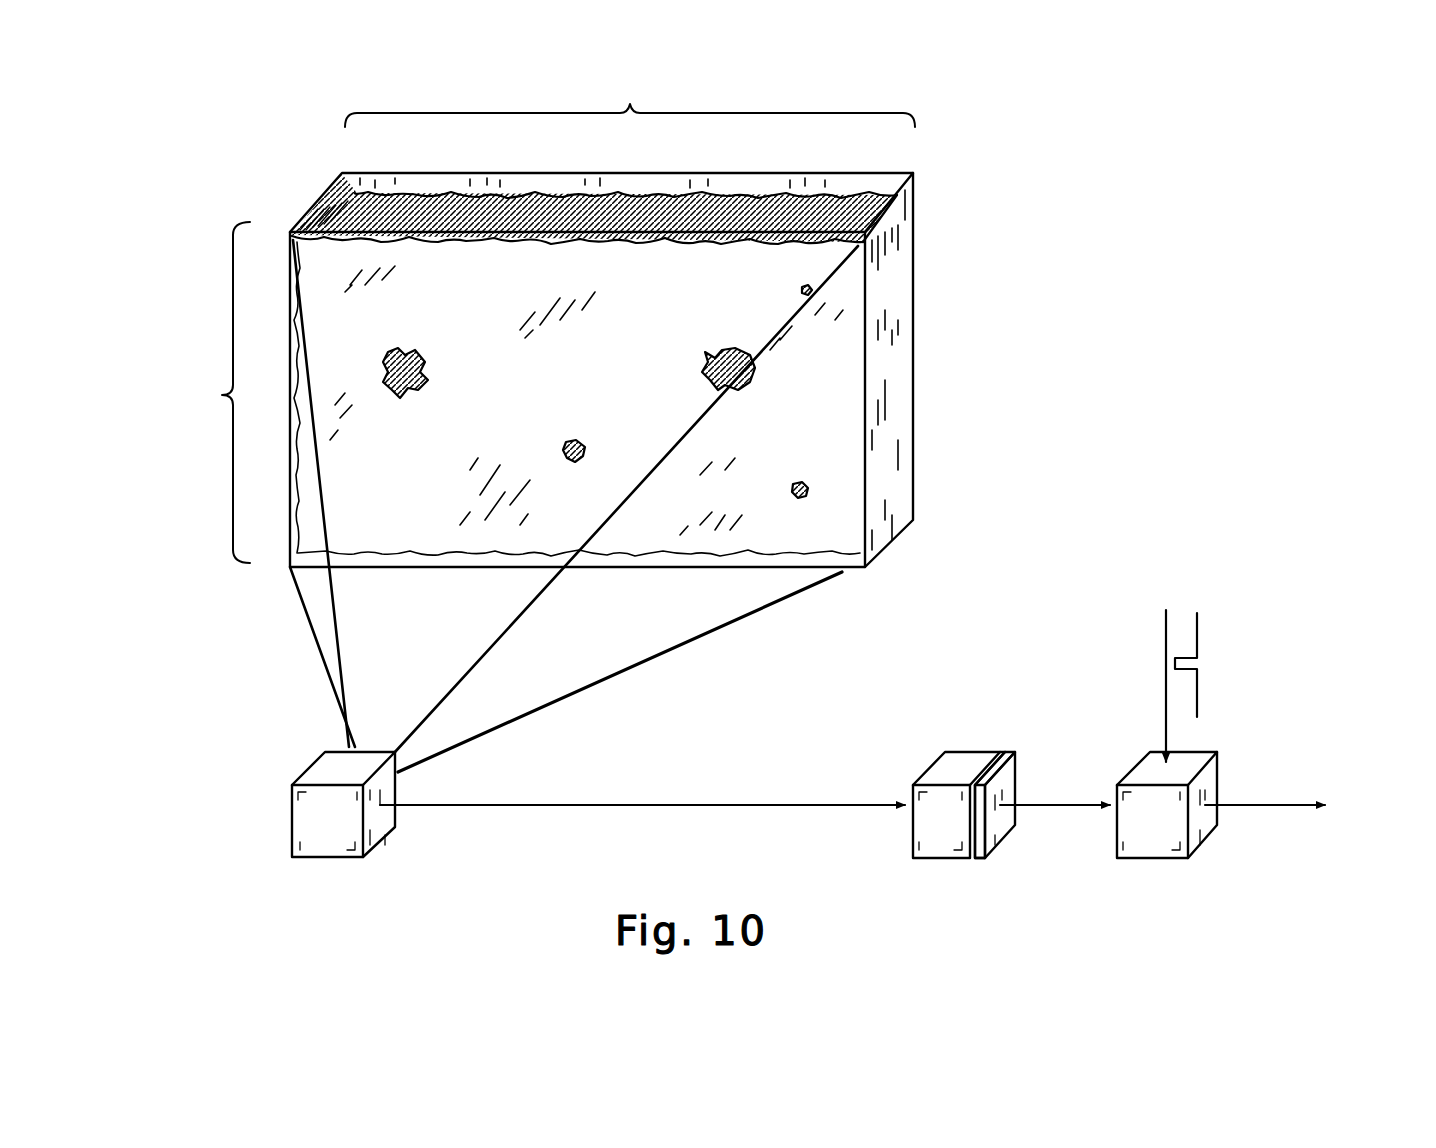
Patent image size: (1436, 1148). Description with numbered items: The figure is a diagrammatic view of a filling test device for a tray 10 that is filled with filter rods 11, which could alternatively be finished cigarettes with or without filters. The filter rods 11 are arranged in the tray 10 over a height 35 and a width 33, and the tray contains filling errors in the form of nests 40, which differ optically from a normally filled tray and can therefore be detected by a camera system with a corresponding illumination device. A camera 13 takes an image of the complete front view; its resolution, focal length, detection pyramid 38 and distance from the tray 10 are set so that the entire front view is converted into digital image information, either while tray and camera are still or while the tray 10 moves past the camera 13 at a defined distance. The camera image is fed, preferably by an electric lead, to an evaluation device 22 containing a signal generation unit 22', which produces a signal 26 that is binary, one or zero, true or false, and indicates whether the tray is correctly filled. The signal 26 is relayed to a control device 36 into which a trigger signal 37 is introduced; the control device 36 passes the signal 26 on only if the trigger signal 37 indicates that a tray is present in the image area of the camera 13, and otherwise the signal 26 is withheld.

The tray 10 is at (893, 330).
The filter rods 11 is at (765, 205).
The camera 13 is at (315, 823).
The evaluation device 22 is at (949, 755).
The signal generation unit 22' is at (1035, 755).
The signal 26 is at (1055, 808).
The width 33 is at (630, 91).
The height 35 is at (206, 392).
The control device 36 is at (1148, 838).
The trigger signal 37 is at (1170, 625).
The detection pyramid 38 is at (630, 684).
The nests 40 is at (395, 352).